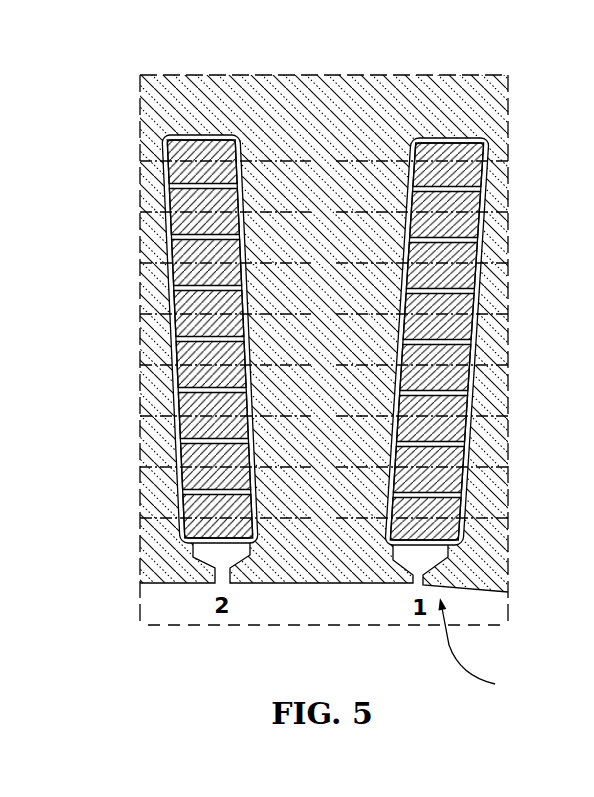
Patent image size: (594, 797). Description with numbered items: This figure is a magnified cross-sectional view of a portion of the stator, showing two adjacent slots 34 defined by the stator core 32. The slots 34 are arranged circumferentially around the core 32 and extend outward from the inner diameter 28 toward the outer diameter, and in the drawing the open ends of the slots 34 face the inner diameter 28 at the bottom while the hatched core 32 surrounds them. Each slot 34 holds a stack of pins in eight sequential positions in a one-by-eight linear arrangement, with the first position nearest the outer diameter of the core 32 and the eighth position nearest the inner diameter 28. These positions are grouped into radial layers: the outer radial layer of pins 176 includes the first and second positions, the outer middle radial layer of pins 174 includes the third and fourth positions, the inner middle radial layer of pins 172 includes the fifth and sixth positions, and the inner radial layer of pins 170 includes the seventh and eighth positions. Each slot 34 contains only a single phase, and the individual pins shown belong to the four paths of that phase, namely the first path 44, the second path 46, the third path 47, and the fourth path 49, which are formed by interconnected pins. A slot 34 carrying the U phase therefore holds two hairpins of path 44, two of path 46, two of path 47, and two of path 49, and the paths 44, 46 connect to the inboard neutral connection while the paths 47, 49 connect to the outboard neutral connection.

The stator core 32 is at (322, 108).
The inner diameter 28 is at (328, 583).
The slots 34 is at (481, 647).
The first path 44 is at (203, 354).
The second path 46 is at (164, 152).
The third path 47 is at (166, 172).
The fourth path 49 is at (207, 407).
The inner radial layer of pins 170 is at (112, 442).
The inner middle radial layer of pins 172 is at (95, 340).
The outer middle radial layer of pins 174 is at (112, 245).
The outer radial layer of pins 176 is at (95, 138).